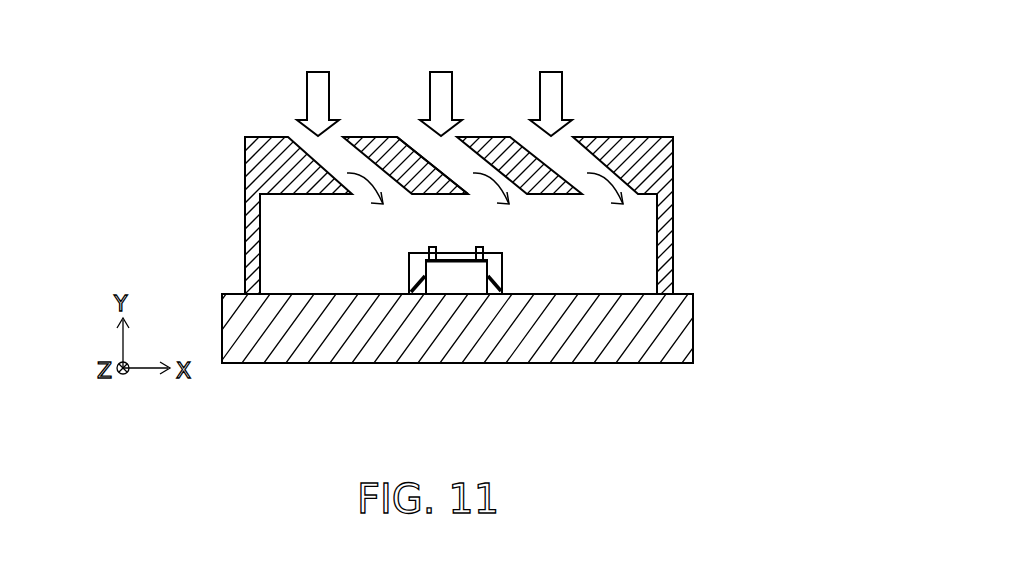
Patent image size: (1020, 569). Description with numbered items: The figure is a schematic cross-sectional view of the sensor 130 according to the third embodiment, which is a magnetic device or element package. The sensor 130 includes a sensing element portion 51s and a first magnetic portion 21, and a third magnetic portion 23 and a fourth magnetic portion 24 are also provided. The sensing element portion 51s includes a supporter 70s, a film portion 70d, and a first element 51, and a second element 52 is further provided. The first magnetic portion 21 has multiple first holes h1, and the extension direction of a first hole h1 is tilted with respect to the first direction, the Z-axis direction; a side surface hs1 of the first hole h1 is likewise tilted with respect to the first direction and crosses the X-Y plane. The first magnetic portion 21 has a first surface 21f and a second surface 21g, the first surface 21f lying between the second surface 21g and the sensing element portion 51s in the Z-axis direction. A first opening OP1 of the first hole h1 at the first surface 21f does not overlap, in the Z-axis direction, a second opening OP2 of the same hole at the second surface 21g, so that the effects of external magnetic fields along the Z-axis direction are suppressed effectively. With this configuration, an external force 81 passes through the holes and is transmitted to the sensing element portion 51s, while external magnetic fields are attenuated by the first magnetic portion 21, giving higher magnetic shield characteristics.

The sensor 130 is at (454, 248).
The first magnetic portion 21 is at (620, 161).
The second surface 21g is at (365, 134).
The first surface 21f is at (436, 195).
The side surface hs1 is at (435, 154).
The first hole h1 is at (500, 155).
The first opening OP1 is at (519, 197).
The second opening OP2 is at (418, 134).
The external force 81 is at (307, 95).
The third magnetic portion 23 is at (663, 233).
The fourth magnetic portion 24 is at (662, 332).
The first element 51 is at (474, 262).
The second element 52 is at (432, 262).
The film portion 70d is at (453, 262).
The supporter 70s is at (526, 333).
The sensing element portion 51s is at (467, 355).